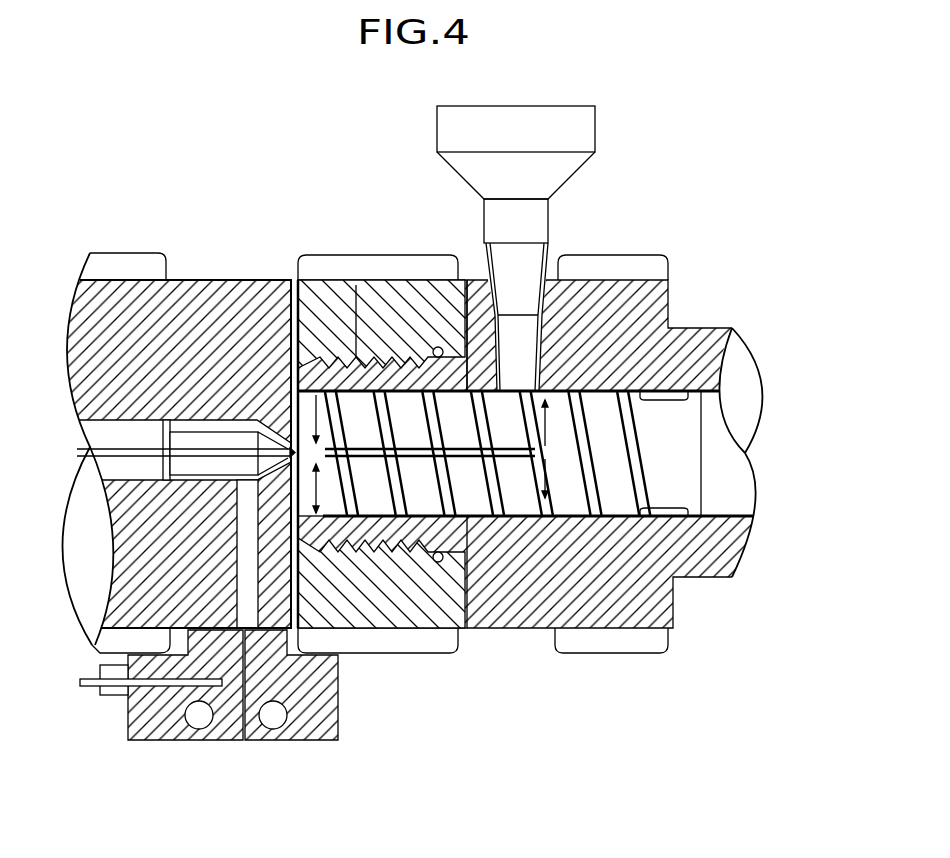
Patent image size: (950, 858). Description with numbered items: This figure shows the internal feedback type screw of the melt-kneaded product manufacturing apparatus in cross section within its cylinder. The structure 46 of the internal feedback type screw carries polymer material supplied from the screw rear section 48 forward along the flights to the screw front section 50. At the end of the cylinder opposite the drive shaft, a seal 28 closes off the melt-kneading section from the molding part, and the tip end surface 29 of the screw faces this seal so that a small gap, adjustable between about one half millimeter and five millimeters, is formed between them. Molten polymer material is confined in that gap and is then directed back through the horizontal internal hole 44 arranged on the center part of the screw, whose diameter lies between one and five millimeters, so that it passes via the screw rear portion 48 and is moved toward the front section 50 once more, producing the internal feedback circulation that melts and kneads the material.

The seal 28 is at (298, 435).
The tip end surface 29 is at (356, 290).
The internal hole 44 is at (523, 520).
The structure of the internal feedback type screw 46 is at (470, 492).
The screw rear section 48 is at (503, 430).
The screw front section 50 is at (343, 540).